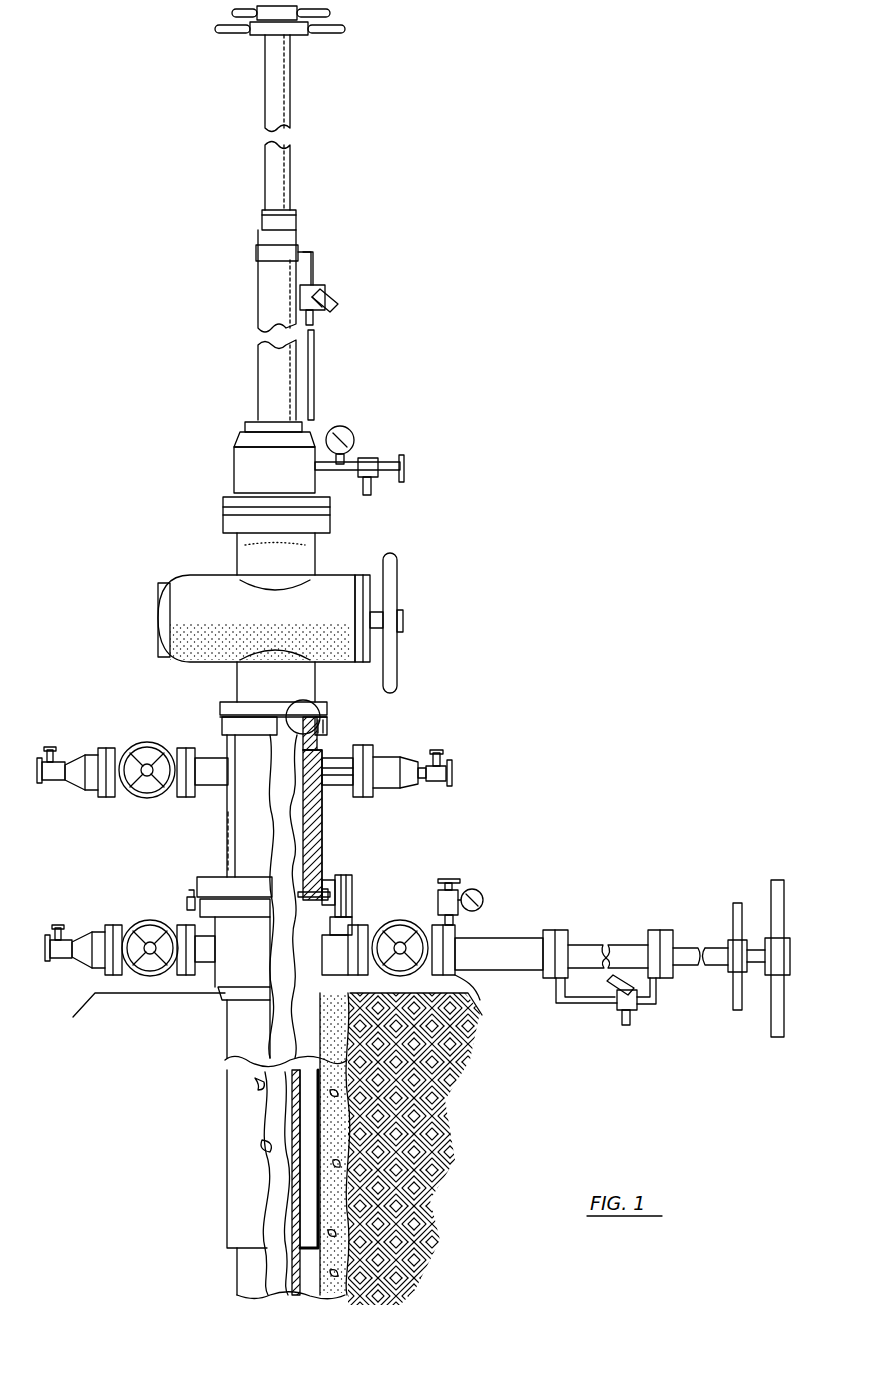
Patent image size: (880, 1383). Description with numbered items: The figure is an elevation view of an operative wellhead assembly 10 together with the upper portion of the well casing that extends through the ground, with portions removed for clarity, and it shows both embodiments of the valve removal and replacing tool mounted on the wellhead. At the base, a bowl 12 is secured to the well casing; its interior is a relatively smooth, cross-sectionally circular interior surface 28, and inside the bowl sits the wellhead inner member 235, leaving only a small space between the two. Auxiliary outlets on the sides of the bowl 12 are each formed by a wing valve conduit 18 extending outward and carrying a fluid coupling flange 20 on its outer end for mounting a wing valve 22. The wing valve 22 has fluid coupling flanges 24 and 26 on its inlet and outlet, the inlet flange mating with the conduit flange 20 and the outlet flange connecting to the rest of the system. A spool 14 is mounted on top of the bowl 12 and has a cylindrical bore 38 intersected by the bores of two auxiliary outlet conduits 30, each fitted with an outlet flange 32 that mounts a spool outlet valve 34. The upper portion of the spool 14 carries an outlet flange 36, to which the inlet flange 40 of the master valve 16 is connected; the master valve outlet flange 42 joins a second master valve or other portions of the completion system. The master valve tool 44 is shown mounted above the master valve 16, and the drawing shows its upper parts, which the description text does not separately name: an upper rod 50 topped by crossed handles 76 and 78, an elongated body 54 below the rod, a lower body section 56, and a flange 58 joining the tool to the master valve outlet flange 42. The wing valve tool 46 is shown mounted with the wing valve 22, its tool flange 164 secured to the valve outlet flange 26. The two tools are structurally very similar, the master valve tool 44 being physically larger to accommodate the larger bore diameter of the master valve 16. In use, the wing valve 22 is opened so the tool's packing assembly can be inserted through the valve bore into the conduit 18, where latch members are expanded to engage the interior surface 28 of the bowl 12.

The wellhead assembly 10 is at (160, 872).
The bowl 12 is at (235, 975).
The spool 14 is at (228, 815).
The master valve 16 is at (173, 603).
The wing valve conduit 18 is at (195, 935).
The fluid coupling flange 20 is at (353, 922).
The wing valve 22 is at (400, 927).
The fluid coupling flange 24 is at (368, 926).
The fluid coupling flange 26 is at (455, 977).
The interior surface 28 is at (293, 953).
The conduit 30 is at (215, 780).
The outlet flange 32 is at (358, 793).
The spool outlet valve 34 is at (125, 745).
The outlet flange 36 is at (222, 728).
The cylindrical bore 38 is at (308, 713).
The inlet flange 40 is at (235, 705).
The outlet flange 42 is at (225, 525).
The master valve tool 44 is at (358, 268).
The wing valve tool 46 is at (603, 936).
The polish rod 50 is at (302, 88).
The lubricator body 54 is at (262, 298).
The stuffing box 56 is at (240, 470).
The flange 58 is at (237, 500).
The handle 76 is at (345, 30).
The handle 78 is at (330, 10).
The tool flange 164 is at (458, 932).
The wellhead inner member 235 is at (322, 868).